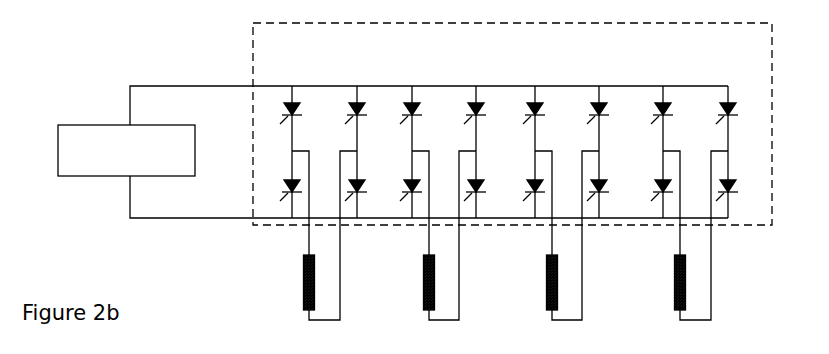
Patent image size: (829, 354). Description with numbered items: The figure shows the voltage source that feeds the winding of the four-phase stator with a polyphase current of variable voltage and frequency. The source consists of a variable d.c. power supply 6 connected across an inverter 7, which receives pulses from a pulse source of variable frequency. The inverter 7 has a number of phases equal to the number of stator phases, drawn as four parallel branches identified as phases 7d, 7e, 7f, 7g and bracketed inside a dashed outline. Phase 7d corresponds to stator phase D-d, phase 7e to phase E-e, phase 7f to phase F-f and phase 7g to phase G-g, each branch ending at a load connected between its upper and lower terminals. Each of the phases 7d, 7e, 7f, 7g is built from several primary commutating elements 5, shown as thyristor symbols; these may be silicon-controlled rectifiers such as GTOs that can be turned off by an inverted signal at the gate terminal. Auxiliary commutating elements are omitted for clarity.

The primary commutating element 5 is at (299, 107).
The variable d.c. power supply 6 is at (70, 177).
The inverter 7 is at (244, 40).
The phase of the inverter 7d is at (358, 79).
The phase of the inverter 7e is at (411, 79).
The phase of the inverter 7f is at (534, 79).
The phase of the inverter 7g is at (729, 79).